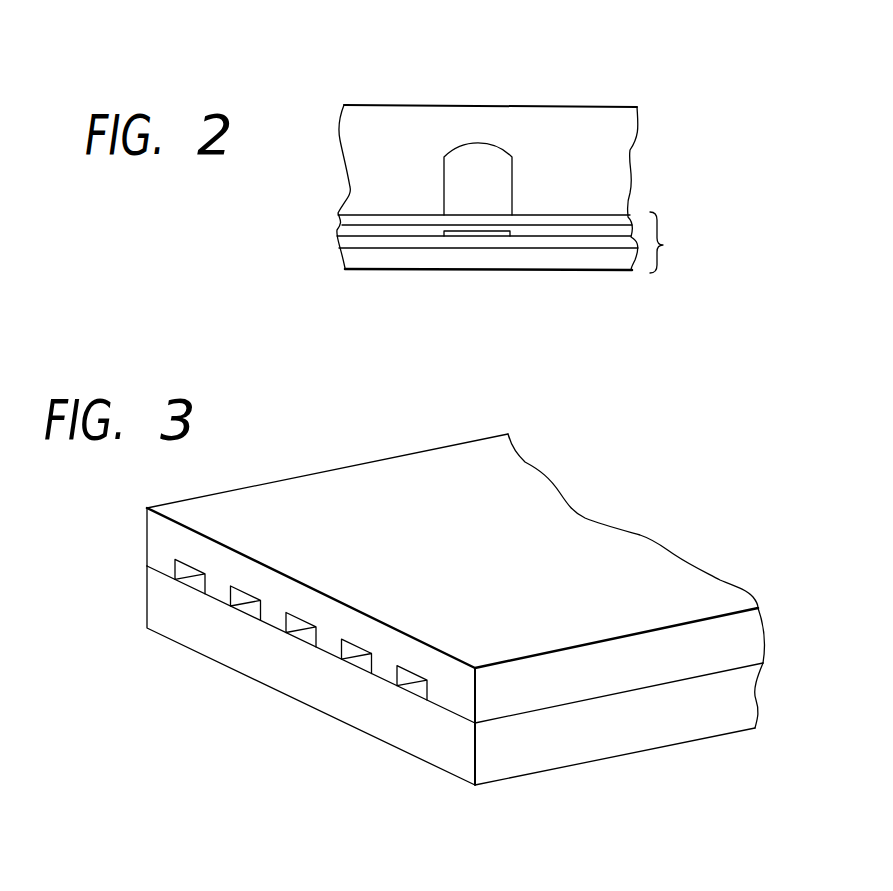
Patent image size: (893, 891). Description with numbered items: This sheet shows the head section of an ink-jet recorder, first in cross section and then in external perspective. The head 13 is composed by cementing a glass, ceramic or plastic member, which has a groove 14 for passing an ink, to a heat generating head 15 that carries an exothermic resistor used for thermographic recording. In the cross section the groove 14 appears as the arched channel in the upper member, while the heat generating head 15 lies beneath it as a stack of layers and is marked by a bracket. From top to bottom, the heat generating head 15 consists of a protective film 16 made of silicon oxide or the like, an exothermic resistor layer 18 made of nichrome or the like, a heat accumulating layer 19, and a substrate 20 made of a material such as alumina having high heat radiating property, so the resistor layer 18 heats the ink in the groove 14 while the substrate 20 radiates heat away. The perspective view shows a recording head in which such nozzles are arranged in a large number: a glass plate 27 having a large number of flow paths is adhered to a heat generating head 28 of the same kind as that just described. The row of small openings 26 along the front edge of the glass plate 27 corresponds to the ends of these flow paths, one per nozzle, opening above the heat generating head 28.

In FIG. 2, the head 13 is at (386, 105).
In FIG. 2, the groove 14 is at (477, 143).
In FIG. 2, the heat generating head 15 is at (673, 242).
In FIG. 2, the protective film 16 is at (562, 221).
In FIG. 2, the exothermic resistor layer 18 is at (512, 233).
In FIG. 2, the heat accumulating layer 19 is at (597, 243).
In FIG. 2, the substrate 20 is at (565, 260).
In FIG. 3, the protrusions 26 is at (397, 671).
In FIG. 3, the glass plate 27 is at (705, 642).
In FIG. 3, the heat generating head 28 is at (703, 728).